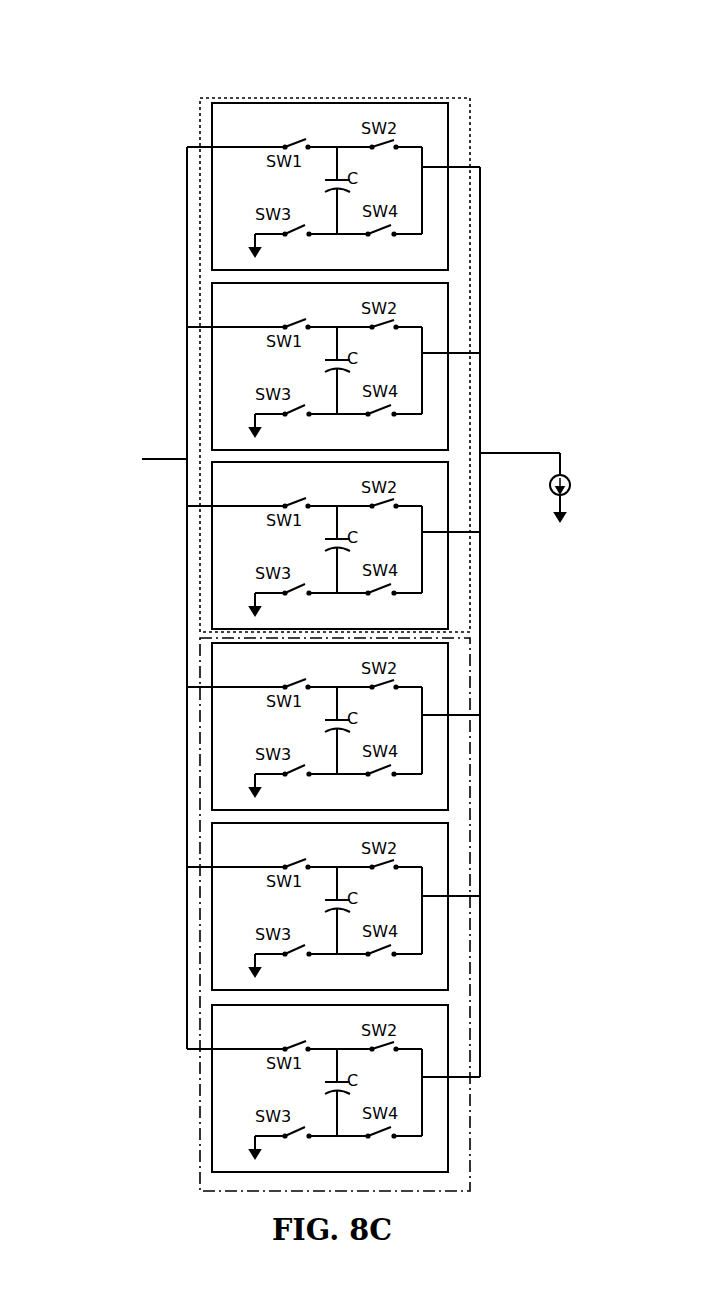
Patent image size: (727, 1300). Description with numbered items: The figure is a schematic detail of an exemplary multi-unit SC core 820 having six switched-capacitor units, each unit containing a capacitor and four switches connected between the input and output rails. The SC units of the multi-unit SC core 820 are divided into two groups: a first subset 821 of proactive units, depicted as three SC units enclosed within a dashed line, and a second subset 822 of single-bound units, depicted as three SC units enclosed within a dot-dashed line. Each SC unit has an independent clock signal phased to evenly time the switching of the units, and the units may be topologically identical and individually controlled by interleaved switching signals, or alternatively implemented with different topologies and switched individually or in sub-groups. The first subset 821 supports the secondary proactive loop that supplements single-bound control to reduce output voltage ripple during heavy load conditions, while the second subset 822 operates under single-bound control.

The multi-unit SC core 820 is at (445, 63).
The first subset 821 is at (200, 133).
The second subset 822 is at (197, 1123).